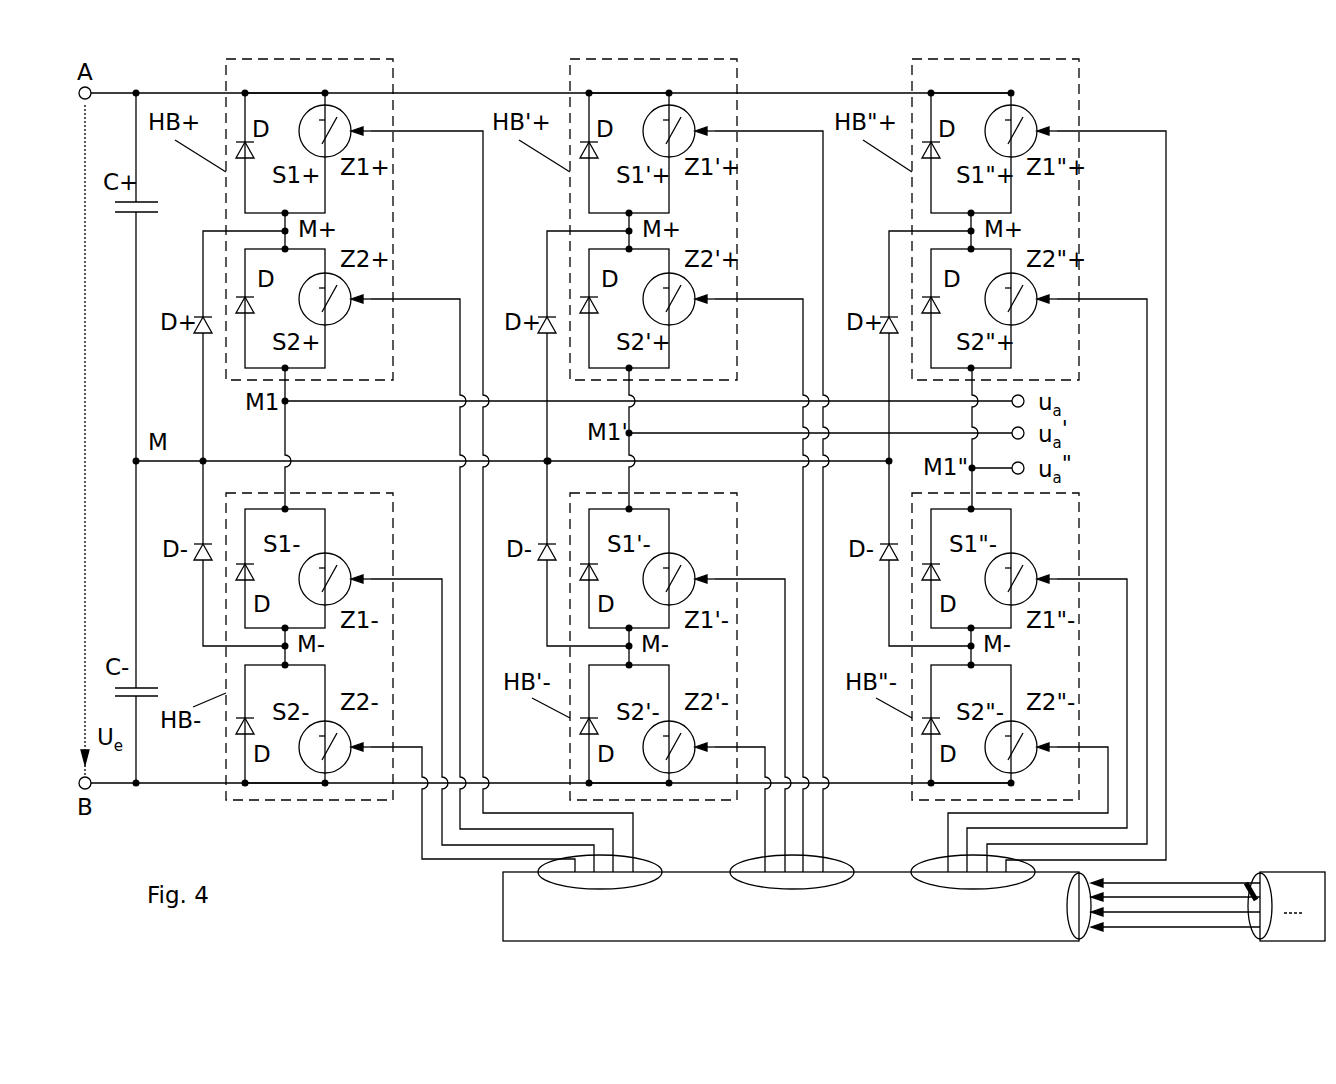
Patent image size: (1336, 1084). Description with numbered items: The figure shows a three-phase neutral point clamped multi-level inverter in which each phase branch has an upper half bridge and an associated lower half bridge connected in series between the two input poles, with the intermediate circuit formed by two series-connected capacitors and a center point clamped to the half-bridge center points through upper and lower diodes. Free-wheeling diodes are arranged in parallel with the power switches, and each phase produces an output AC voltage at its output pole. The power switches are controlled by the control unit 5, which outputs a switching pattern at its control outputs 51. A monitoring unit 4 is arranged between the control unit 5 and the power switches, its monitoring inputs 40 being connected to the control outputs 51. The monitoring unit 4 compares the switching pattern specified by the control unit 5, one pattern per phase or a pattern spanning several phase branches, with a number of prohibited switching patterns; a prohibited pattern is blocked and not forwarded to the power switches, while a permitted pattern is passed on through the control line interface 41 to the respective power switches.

The monitoring unit 4 is at (503, 905).
The monitoring inputs 40 is at (1068, 900).
The control line bundle interface 41 is at (849, 860).
The control unit 5 is at (1208, 906).
The control outputs 51 is at (1248, 886).